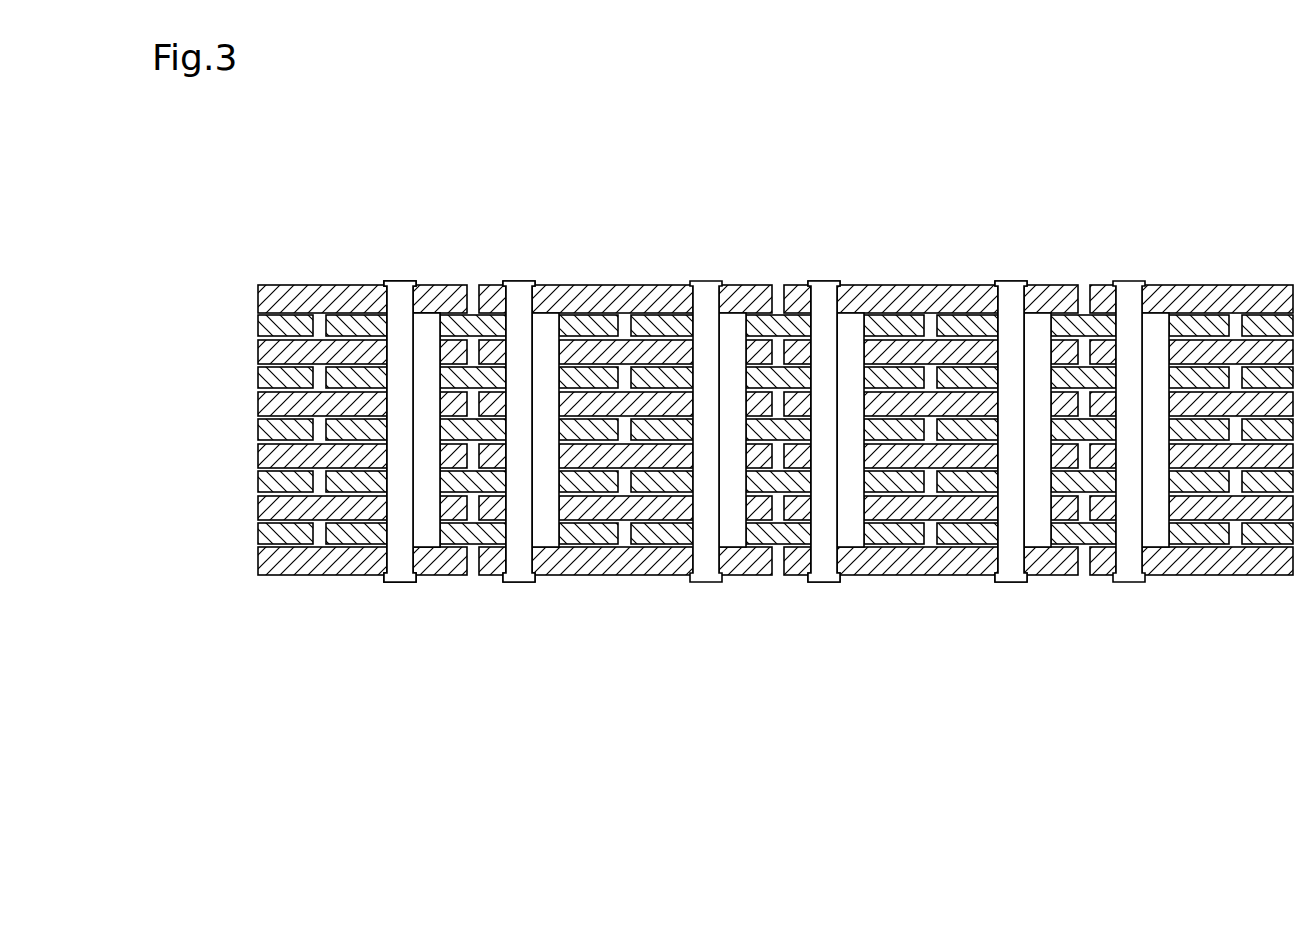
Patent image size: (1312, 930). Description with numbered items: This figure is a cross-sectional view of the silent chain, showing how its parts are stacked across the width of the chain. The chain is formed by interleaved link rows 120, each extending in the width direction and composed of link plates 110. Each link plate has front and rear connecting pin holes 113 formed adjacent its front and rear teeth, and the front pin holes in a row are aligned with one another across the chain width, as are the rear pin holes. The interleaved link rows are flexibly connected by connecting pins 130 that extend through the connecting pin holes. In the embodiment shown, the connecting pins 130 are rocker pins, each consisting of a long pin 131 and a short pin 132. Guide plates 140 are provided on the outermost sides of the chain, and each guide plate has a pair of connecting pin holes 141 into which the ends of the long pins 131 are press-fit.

The link plate 110 is at (258, 326).
The connecting pin hole 113 is at (398, 322).
The link row 120 is at (167, 303).
The connecting pin 130 is at (345, 643).
The long pin 131 is at (397, 558).
The short pin 132 is at (427, 558).
The guide plate 140 is at (290, 292).
The connecting pin hole 141 is at (848, 292).